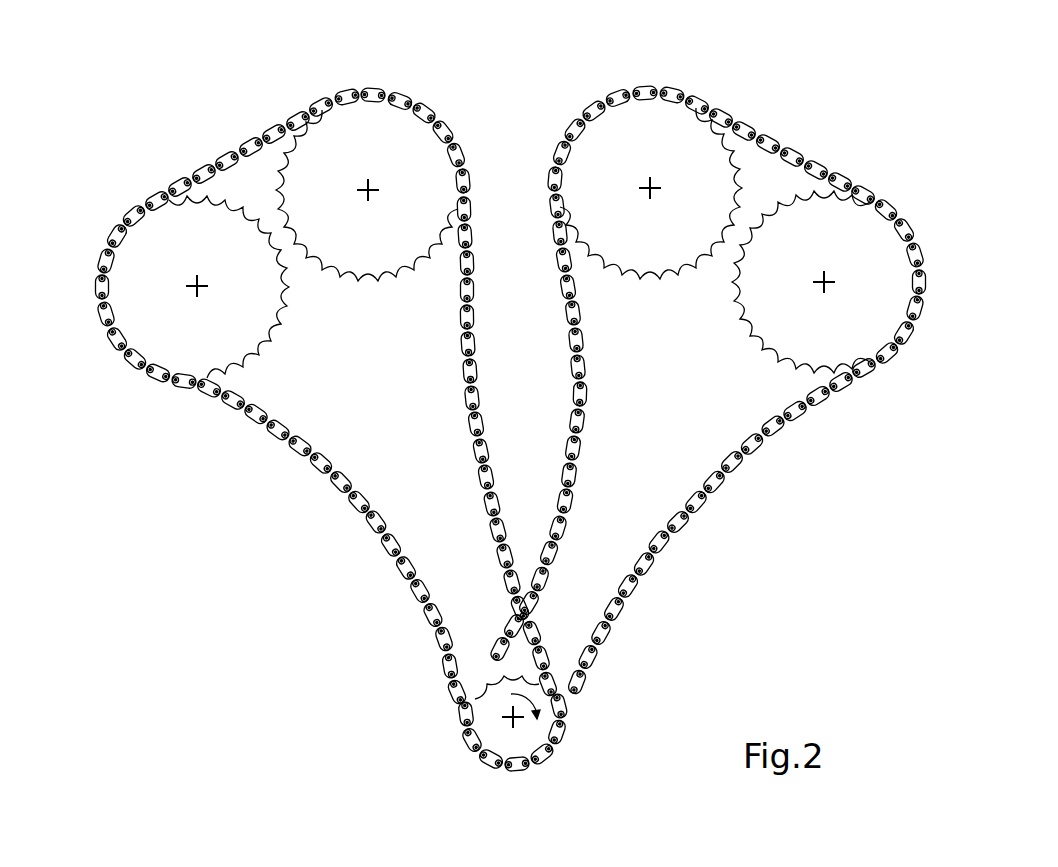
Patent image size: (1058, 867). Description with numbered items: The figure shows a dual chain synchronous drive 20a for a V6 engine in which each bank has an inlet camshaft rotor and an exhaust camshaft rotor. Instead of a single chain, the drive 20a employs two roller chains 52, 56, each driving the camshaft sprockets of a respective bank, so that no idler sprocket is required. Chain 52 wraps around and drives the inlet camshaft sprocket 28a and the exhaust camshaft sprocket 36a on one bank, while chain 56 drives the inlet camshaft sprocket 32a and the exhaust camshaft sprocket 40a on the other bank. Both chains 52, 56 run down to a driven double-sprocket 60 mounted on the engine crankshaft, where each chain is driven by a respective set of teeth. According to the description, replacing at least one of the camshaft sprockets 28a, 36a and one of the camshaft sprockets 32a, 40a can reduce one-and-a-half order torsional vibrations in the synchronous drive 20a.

The drive 20a is at (133, 156).
The inlet camshaft sprocket 28a is at (347, 133).
The inlet camshaft sprocket 32a is at (658, 127).
The exhaust camshaft sprocket 36a is at (150, 315).
The exhaust camshaft sprocket 40a is at (848, 220).
The chain 52 is at (305, 460).
The chain 56 is at (668, 542).
The driven double-sprocket 60 is at (497, 728).